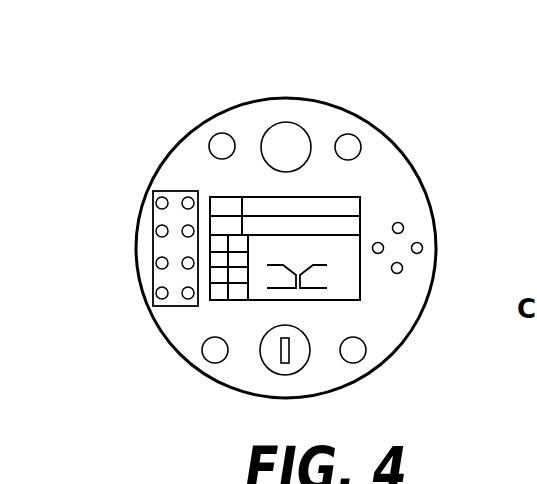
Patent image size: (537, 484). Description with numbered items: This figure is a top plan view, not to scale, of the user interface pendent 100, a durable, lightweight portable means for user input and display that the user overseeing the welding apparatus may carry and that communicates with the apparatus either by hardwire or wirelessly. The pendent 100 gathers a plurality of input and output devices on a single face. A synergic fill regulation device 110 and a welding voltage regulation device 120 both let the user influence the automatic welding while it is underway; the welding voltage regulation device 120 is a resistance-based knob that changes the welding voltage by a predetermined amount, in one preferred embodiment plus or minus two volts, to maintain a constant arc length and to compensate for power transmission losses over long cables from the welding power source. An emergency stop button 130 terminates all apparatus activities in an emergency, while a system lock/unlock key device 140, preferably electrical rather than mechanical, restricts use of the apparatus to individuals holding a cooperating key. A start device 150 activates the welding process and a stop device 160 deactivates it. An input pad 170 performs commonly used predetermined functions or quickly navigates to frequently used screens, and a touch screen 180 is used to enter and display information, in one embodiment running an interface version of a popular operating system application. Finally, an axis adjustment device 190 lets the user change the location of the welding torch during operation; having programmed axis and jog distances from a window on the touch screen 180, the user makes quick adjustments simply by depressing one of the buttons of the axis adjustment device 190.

The user interface pendent 100 is at (150, 104).
The synergic fill regulation device 110 is at (292, 122).
The welding voltage regulation device 120 is at (222, 133).
The emergency stop button 130 is at (357, 136).
The system lock/unlock key device 140 is at (287, 375).
The start device 150 is at (212, 362).
The stop device 160 is at (358, 360).
The input pad 170 is at (155, 245).
The touch screen 180 is at (362, 296).
The axis adjustment device 190 is at (403, 228).